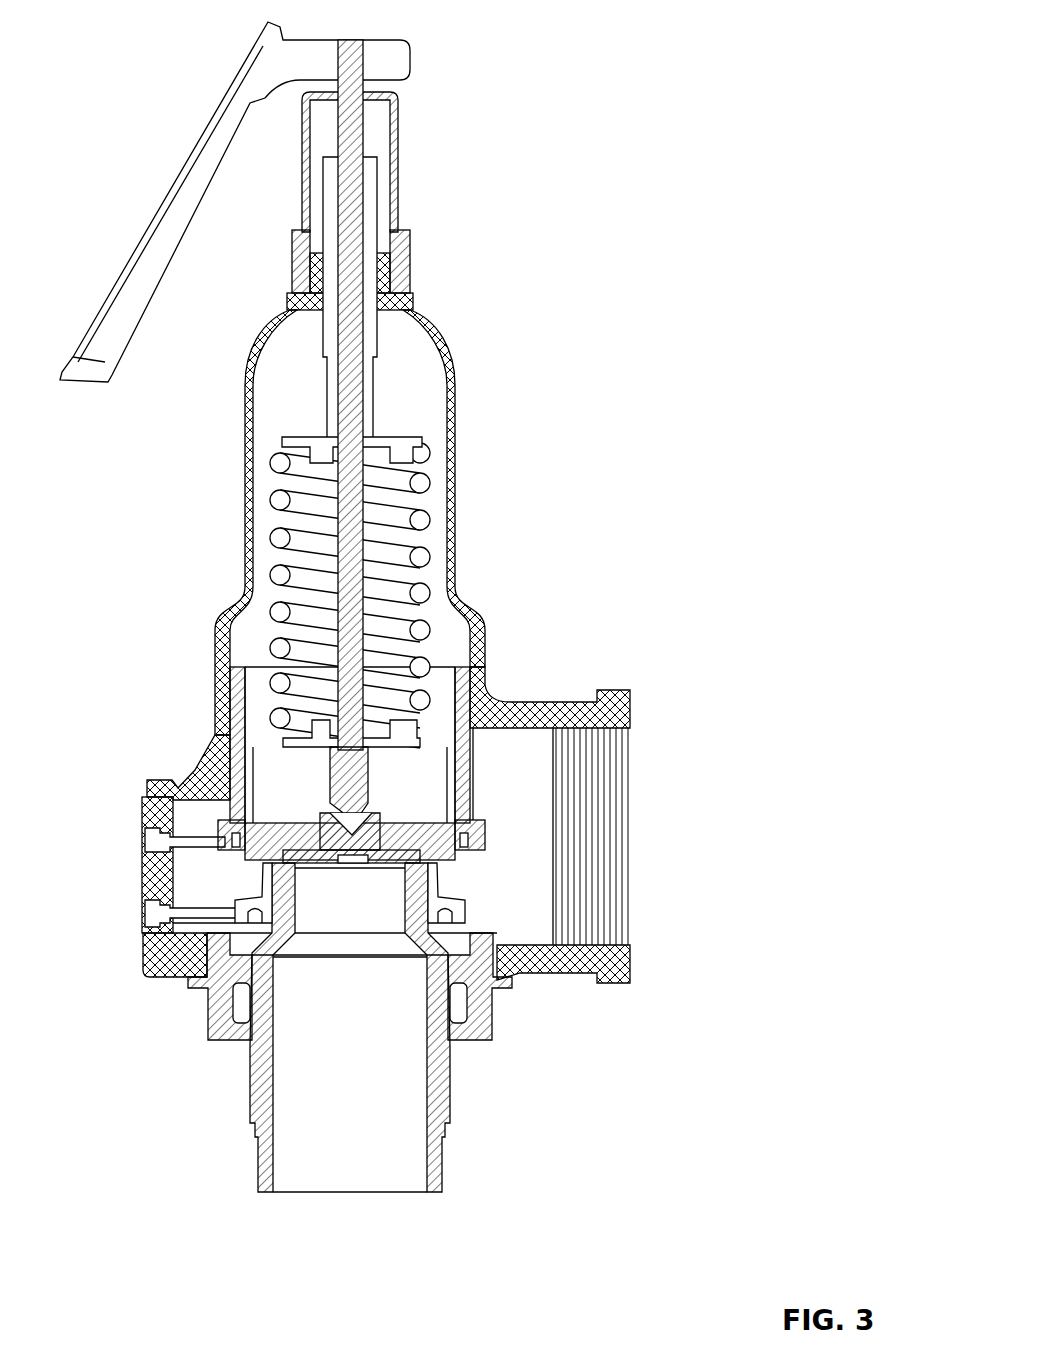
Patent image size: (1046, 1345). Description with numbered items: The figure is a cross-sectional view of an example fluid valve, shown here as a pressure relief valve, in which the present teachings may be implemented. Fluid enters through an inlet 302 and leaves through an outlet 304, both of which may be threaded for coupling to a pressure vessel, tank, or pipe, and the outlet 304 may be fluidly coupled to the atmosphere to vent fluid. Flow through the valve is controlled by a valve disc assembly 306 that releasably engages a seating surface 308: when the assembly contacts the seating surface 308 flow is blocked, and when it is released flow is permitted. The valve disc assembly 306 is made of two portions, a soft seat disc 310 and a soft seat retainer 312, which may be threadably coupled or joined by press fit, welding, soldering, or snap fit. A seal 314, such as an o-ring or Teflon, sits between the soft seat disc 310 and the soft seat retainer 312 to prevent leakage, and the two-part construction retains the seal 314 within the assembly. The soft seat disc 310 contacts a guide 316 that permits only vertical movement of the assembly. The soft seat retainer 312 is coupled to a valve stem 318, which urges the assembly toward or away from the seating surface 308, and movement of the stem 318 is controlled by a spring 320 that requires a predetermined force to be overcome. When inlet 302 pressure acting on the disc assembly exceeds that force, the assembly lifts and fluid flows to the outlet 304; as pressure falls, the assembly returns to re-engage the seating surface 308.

The inlet 302 is at (345, 1197).
The outlet 304 is at (632, 833).
The valve disc assembly 306 is at (256, 731).
The seating surface 308 is at (277, 862).
The soft seat disc 310 is at (245, 765).
The soft seat retainer 312 is at (320, 832).
The seal 314 is at (417, 863).
The guide 316 is at (463, 683).
The valve stem 318 is at (352, 427).
The spring 320 is at (418, 512).